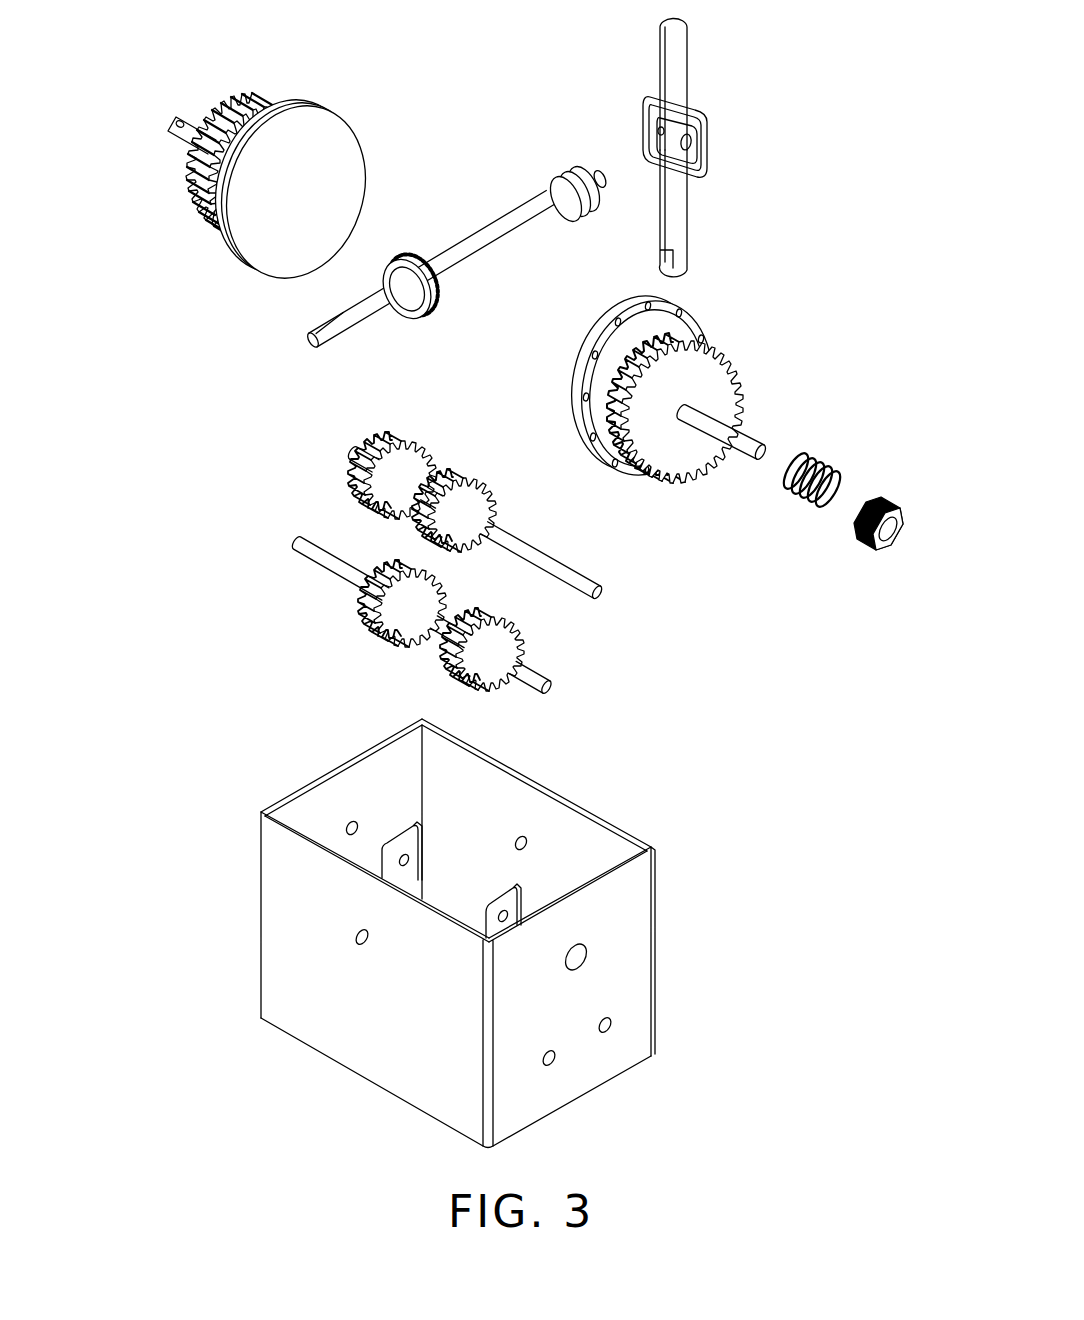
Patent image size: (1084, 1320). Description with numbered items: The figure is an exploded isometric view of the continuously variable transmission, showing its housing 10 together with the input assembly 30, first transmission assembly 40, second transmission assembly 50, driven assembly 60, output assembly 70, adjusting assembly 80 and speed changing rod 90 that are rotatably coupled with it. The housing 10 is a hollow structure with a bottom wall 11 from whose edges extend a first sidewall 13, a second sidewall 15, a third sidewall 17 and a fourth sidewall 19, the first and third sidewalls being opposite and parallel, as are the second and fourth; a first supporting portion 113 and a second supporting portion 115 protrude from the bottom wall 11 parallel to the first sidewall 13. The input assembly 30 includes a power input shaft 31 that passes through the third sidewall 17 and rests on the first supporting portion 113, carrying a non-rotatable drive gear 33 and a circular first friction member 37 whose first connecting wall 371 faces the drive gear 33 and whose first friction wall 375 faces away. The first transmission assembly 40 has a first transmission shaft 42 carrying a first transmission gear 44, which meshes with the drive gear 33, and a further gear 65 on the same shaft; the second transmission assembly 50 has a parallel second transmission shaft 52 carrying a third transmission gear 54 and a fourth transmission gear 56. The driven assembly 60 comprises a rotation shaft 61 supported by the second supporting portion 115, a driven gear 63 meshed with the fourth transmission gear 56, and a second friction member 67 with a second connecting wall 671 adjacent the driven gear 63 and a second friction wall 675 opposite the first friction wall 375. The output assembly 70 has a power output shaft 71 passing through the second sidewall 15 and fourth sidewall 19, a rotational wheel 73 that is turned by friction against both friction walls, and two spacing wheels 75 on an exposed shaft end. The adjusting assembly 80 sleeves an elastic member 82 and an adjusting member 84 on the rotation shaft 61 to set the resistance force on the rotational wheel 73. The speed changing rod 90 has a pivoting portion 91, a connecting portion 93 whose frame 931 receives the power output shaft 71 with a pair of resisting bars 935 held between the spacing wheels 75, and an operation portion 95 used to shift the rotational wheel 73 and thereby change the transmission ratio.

The housing 10 is at (458, 933).
The bottom wall 11 is at (309, 1048).
The first sidewall 13 is at (622, 970).
The second sidewall 15 is at (512, 798).
The third sidewall 17 is at (295, 804).
The fourth sidewall 19 is at (287, 932).
The first supporting portion 113 is at (402, 826).
The second supporting portion 115 is at (516, 897).
The input assembly 30 is at (278, 167).
The power input shaft 31 is at (192, 140).
The drive gear 33 is at (260, 100).
The first friction member 37 is at (325, 107).
The first connecting wall 371 is at (205, 215).
The first friction wall 375 is at (343, 138).
The first transmission assembly 40 is at (438, 486).
The first transmission shaft 42 is at (360, 448).
The first transmission gear 44 is at (410, 441).
The gear 65 is at (474, 470).
The second transmission assembly 50 is at (382, 587).
The second transmission shaft 52 is at (340, 572).
The third transmission gear 54 is at (373, 633).
The fourth transmission gear 56 is at (450, 672).
The driven assembly 60 is at (686, 422).
The rotation shaft 61 is at (736, 442).
The driven gear 63 is at (715, 376).
The second friction member 67 is at (660, 395).
The second connecting wall 671 is at (612, 452).
The second friction wall 675 is at (628, 318).
The output assembly 70 is at (456, 233).
The power output shaft 71 is at (495, 235).
The rotational wheel 73 is at (415, 258).
The spacing wheels 75 is at (556, 180).
The adjusting assembly 80 is at (814, 523).
The elastic member 82 is at (803, 506).
The adjusting member 84 is at (847, 540).
The speed changing rod 90 is at (705, 147).
The pivoting portion 91 is at (682, 228).
The connecting portion 93 is at (746, 139).
The frame 931 is at (706, 123).
The resisting bars 935 is at (688, 145).
The operation portion 95 is at (683, 70).